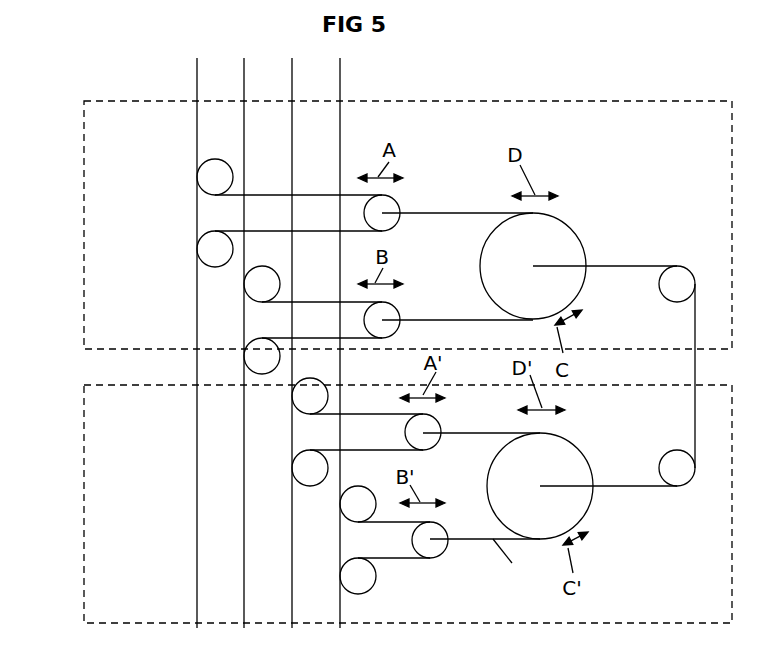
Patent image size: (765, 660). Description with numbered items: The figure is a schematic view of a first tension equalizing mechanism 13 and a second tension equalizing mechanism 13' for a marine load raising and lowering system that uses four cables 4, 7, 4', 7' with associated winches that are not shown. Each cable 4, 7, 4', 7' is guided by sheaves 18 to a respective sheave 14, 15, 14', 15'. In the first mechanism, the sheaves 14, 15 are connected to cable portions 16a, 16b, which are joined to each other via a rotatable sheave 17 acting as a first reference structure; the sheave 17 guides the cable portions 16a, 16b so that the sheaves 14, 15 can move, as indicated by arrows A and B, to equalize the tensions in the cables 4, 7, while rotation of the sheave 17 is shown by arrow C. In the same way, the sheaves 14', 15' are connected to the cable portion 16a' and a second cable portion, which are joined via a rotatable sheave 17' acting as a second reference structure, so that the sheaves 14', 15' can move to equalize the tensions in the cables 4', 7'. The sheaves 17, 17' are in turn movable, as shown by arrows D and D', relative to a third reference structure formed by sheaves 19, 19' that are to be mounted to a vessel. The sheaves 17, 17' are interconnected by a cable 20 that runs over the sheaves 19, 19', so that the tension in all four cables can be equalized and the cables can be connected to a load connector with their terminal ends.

The cable 4 is at (173, 343).
The cable 7 is at (226, 343).
The cable 4' is at (270, 343).
The cable 7' is at (319, 343).
The first tension equalizing mechanism 13 is at (373, 225).
The second tension equalizing mechanism 13' is at (372, 504).
The sheave 14 is at (329, 228).
The sheave 15 is at (331, 344).
The cable portion 16a is at (457, 190).
The cable portion 16b is at (450, 318).
The rotatable sheave 17 is at (578, 257).
The sheaves 18 is at (203, 177).
The sheave 19 is at (685, 344).
The sheave 14' is at (396, 442).
The sheave 15' is at (449, 558).
The cable portion 16a' is at (481, 410).
The rotatable sheave 17' is at (556, 478).
The sheave 19' is at (687, 492).
The cable 20 is at (620, 488).